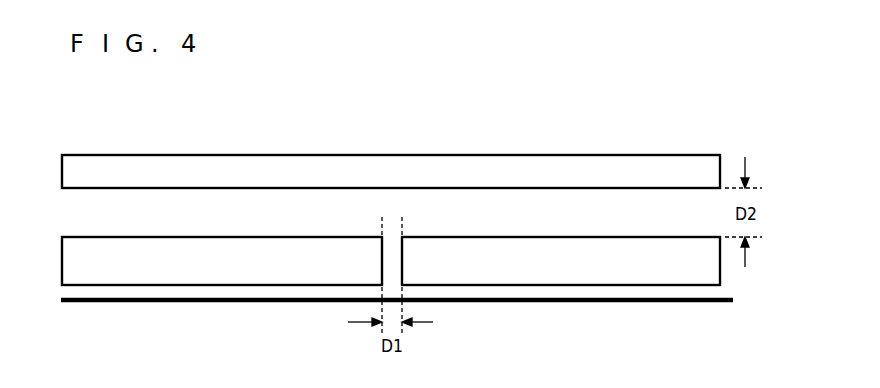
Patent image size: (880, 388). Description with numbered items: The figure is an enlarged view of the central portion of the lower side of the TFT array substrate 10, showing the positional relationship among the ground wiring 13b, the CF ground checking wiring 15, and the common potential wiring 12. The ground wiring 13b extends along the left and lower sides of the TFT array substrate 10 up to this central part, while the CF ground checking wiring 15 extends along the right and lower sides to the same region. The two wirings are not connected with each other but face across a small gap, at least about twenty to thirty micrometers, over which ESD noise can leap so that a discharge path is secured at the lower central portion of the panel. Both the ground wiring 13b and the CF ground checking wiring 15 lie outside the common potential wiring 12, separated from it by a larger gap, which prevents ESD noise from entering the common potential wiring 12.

The common potential wiring 12 is at (609, 155).
The ground wiring 13b is at (277, 285).
The CF ground checking wiring 15 is at (613, 285).
The TFT array substrate 10 is at (153, 303).